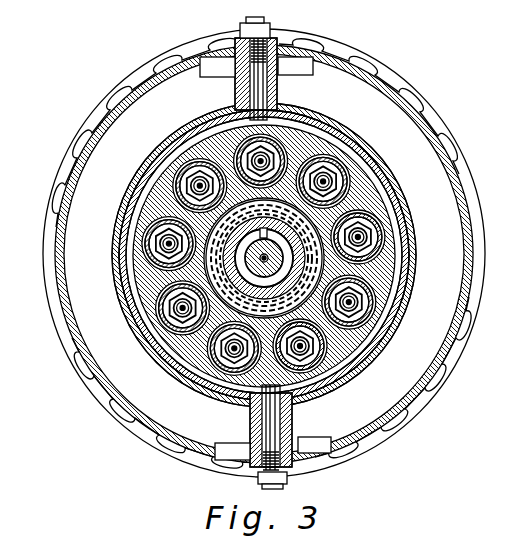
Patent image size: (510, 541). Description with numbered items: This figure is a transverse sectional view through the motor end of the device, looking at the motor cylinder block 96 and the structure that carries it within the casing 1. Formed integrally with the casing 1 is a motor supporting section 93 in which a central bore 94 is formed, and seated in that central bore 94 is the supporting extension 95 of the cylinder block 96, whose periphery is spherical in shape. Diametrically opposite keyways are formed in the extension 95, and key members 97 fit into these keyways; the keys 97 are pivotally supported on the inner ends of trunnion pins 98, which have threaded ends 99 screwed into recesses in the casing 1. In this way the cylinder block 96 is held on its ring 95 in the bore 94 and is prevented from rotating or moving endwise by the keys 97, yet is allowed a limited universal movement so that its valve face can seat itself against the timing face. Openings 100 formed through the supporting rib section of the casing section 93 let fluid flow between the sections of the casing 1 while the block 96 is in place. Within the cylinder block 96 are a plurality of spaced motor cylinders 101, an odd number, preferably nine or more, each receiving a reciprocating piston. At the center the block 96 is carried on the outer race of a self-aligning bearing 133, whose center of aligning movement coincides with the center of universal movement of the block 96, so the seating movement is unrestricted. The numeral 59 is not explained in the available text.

The casing 1 is at (402, 101).
The motor supporting section 93 is at (355, 97).
The central bore 94 is at (135, 180).
The supporting extension 95 is at (153, 331).
The motor cylinder block 96 is at (307, 113).
The key members 97 is at (217, 112).
The trunnion pins 98 is at (272, 83).
The threaded ends 99 is at (268, 30).
The openings 100 is at (205, 48).
The motor cylinders 101 is at (345, 186).
The self-aligning bearing 133 is at (402, 231).
The hub 59 is at (278, 526).